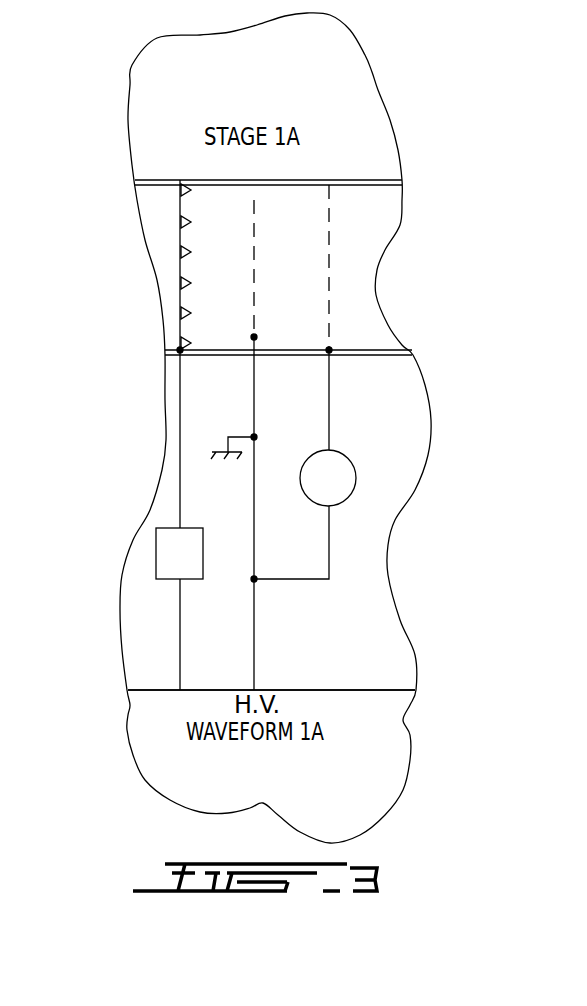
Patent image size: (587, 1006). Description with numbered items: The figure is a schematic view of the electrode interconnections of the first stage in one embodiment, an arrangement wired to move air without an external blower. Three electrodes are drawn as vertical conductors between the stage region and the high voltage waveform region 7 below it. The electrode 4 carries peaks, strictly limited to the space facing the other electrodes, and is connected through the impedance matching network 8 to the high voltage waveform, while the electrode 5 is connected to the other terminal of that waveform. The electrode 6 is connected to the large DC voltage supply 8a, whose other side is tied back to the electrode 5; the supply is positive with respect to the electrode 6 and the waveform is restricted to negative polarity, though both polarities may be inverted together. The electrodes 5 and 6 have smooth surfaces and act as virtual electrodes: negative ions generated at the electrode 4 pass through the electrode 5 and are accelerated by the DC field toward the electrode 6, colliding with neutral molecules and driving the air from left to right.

The electrode 4 is at (180, 186).
The electrode 5 is at (256, 200).
The electrode 6 is at (331, 187).
The high voltage waveform source 7 is at (155, 737).
The impedance matching network Z1A 8 is at (188, 532).
The DC voltage supply 8a is at (314, 497).